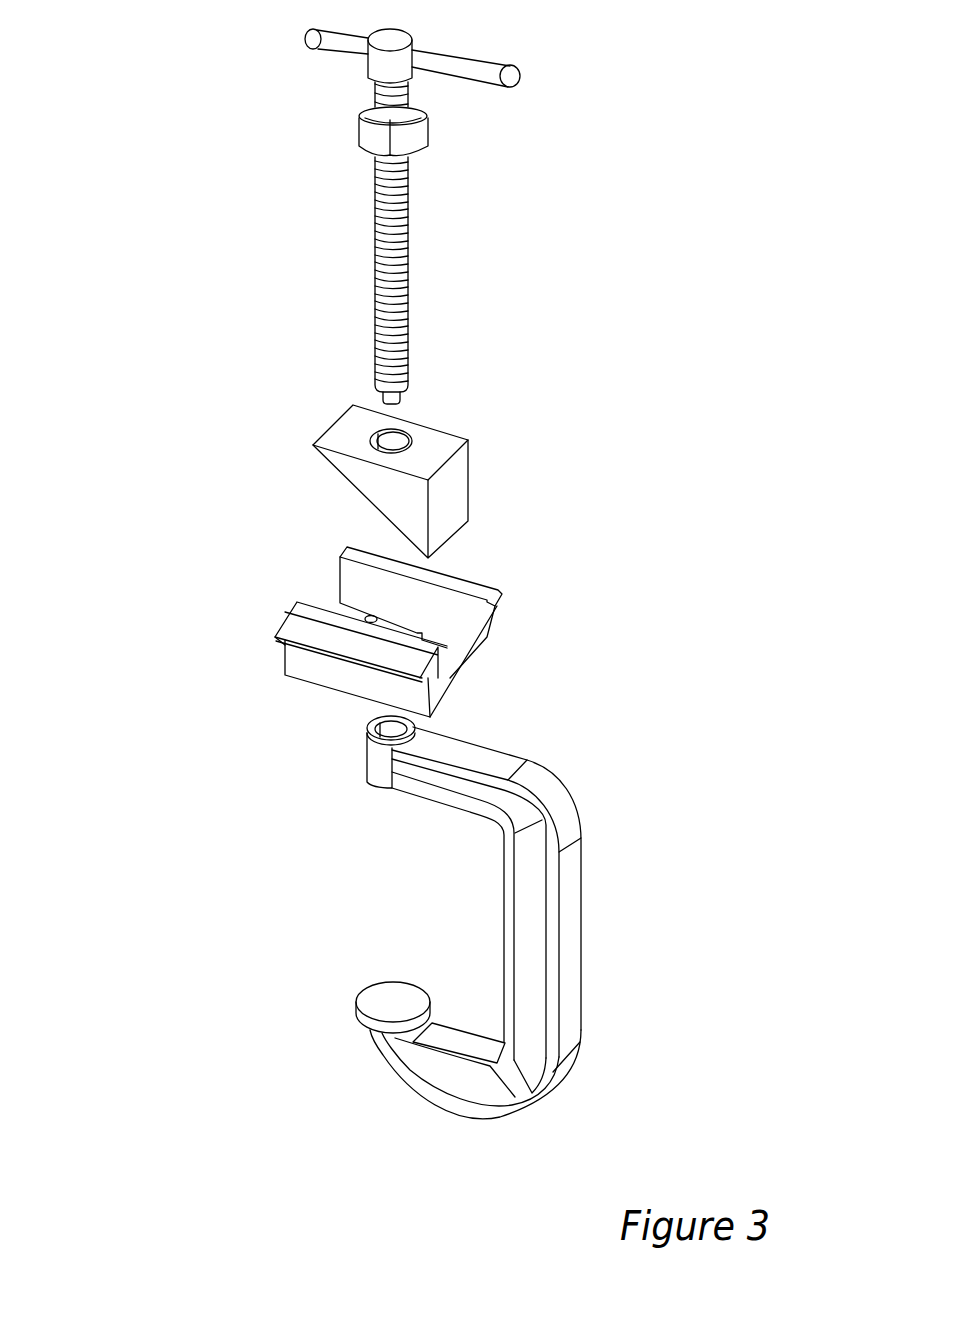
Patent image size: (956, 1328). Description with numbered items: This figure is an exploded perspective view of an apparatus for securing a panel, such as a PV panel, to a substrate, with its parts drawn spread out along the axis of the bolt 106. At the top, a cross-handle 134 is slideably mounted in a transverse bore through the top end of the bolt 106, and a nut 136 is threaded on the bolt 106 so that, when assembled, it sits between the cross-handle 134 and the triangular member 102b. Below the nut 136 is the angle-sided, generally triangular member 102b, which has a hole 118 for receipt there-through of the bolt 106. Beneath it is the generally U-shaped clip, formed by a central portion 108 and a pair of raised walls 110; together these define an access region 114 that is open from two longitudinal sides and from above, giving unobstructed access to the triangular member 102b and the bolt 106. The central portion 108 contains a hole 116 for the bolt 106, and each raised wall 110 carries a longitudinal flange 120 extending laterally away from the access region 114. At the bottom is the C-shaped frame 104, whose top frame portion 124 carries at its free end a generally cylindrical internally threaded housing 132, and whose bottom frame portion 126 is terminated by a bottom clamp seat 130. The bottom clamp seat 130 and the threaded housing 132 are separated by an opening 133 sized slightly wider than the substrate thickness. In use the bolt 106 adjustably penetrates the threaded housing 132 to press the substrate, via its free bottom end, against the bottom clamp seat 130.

The cross-handle 134 is at (490, 68).
The nut 136 is at (423, 140).
The bolt 106 is at (408, 268).
The hole 118 is at (400, 447).
The triangular member 102b is at (473, 452).
The access region 114 is at (320, 598).
The hole 116 is at (412, 630).
The longitudinal flange 120 is at (283, 630).
The central portion 108 is at (391, 619).
The raised wall 110 is at (303, 662).
The top frame portion 124 is at (496, 747).
The internally threaded housing 132 is at (362, 767).
The C-shaped frame 104 is at (440, 932).
The opening 133 is at (370, 898).
The bottom clamp seat 130 is at (378, 1003).
The bottom frame portion 126 is at (458, 1112).